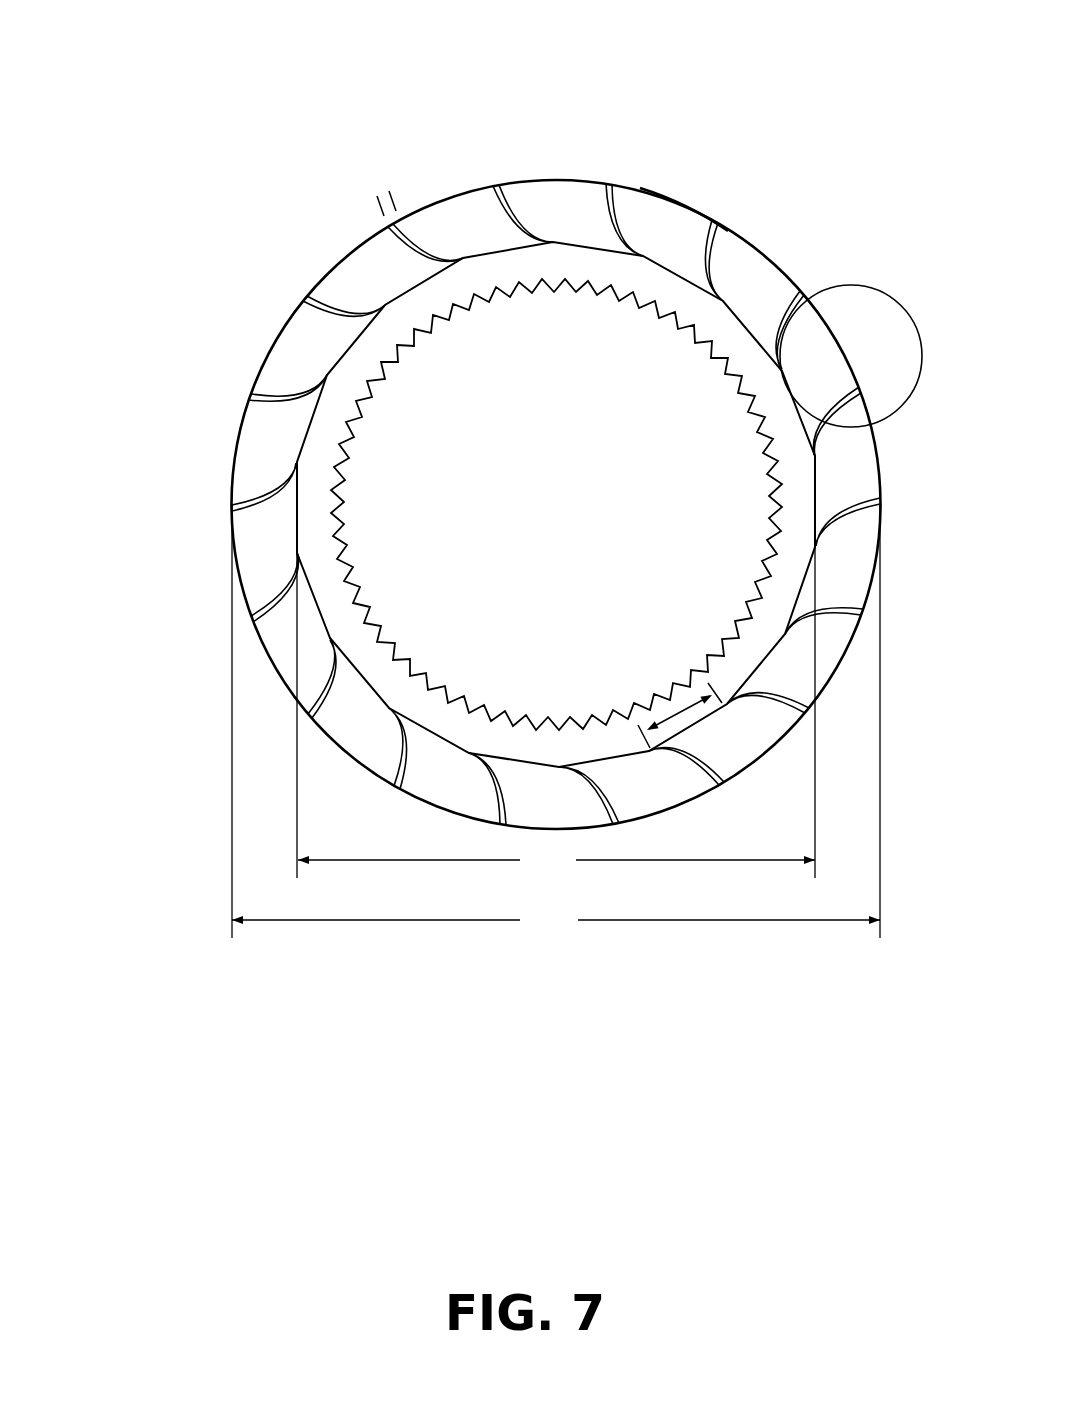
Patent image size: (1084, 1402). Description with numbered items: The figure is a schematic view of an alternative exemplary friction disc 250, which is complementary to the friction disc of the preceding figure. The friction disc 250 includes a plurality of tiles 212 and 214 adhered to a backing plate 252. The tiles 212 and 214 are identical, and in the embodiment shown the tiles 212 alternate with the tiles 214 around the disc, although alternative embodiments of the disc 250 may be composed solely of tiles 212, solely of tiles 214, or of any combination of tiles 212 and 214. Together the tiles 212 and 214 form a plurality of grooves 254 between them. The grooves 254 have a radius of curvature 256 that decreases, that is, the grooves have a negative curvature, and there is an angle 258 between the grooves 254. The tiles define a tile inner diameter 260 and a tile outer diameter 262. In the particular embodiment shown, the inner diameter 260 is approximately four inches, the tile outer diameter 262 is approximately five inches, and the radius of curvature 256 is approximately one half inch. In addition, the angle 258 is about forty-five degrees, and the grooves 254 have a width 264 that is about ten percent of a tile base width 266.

The friction disc 250 is at (408, 113).
The tiles 212 is at (372, 257).
The tiles 214 is at (292, 357).
The backing plate 252 is at (530, 262).
The grooves 254 is at (497, 186).
The radius of curvature 256 is at (790, 336).
The angle 258 is at (700, 275).
The tile inner diameter 260 is at (556, 667).
The tile outer diameter 262 is at (556, 721).
The width 264 is at (399, 198).
The tile base width 266 is at (670, 712).